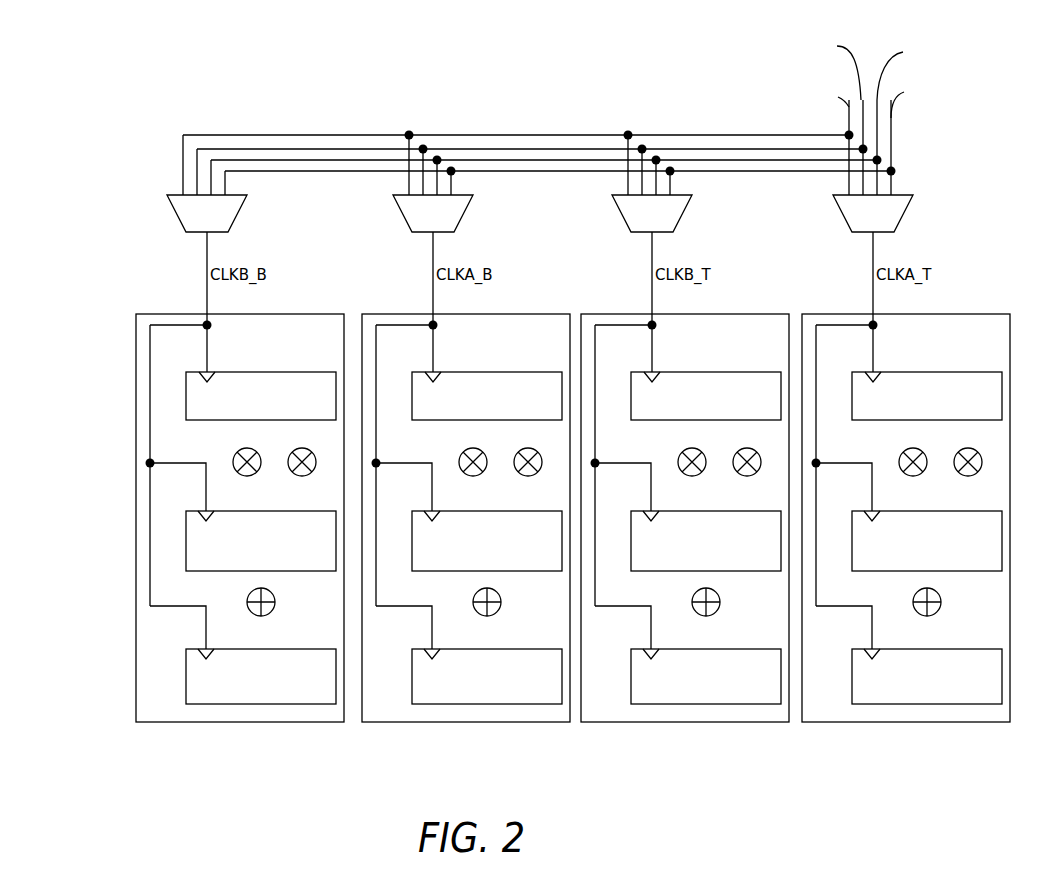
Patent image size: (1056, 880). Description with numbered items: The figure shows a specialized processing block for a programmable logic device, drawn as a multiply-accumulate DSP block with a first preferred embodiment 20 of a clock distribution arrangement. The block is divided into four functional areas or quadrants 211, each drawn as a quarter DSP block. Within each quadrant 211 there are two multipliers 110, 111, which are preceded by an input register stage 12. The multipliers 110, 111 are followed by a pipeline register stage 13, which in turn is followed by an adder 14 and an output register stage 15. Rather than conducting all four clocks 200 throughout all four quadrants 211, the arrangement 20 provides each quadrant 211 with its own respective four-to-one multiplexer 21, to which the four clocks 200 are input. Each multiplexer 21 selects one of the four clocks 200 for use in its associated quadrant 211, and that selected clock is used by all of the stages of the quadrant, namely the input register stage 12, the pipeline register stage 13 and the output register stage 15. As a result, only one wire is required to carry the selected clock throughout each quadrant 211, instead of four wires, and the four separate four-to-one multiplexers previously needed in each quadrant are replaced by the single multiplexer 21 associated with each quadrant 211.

The first preferred embodiment 20 is at (564, 509).
The quadrant 211 is at (138, 722).
The 4:1 multiplexer 21 is at (188, 234).
The clocks 200 is at (684, 171).
The input register stage 12 is at (1016, 372).
The pipeline register stage 13 is at (1016, 512).
The output register stage 15 is at (1016, 649).
The multiplier 110 is at (237, 452).
The multiplier 111 is at (302, 476).
The adder 14 is at (271, 612).